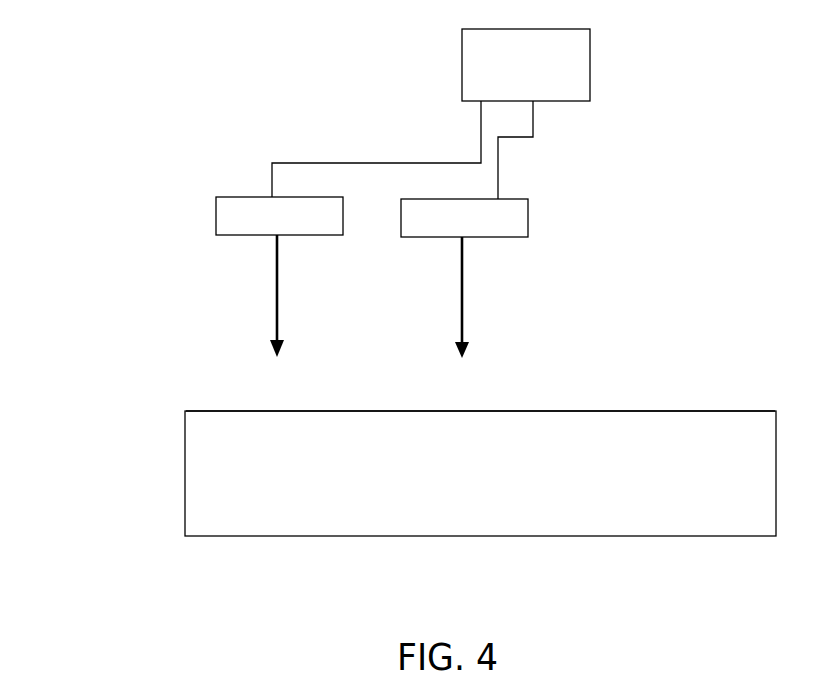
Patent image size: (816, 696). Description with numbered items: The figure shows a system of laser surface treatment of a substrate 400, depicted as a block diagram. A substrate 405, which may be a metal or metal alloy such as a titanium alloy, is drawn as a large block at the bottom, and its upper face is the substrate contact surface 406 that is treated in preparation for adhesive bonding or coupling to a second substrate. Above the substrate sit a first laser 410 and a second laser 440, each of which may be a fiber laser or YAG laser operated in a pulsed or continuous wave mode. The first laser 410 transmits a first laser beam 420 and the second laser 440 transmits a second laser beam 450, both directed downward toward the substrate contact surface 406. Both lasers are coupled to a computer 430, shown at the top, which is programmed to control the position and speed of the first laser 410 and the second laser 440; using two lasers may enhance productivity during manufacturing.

The system of laser surface treatment of a substrate 400 is at (85, 305).
The substrate 405 is at (242, 518).
The substrate contact surface 406 is at (603, 410).
The first laser 410 is at (507, 218).
The first laser beam 420 is at (463, 308).
The computer 430 is at (564, 65).
The second laser 440 is at (242, 215).
The second laser beam 450 is at (275, 273).